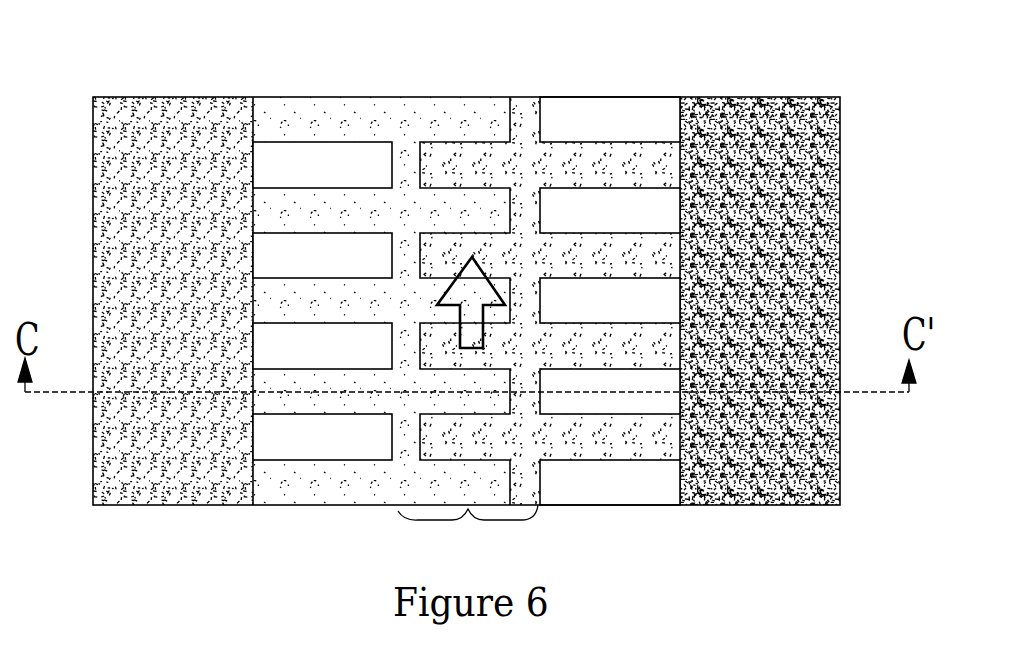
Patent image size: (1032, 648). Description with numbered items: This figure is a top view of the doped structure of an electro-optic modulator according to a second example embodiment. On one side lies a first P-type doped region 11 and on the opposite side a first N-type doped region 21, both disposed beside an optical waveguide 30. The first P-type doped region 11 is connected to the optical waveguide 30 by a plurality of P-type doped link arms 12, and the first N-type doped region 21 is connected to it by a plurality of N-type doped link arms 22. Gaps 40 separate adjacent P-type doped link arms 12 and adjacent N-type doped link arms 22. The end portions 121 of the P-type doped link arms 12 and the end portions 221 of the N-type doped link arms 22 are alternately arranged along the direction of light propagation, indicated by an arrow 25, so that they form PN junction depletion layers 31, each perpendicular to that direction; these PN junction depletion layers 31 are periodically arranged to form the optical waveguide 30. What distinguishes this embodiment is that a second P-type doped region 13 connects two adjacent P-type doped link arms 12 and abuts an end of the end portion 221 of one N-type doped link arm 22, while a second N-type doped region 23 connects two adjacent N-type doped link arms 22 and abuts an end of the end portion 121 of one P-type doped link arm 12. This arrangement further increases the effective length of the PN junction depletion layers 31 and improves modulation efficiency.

The first P-type doped region 11 is at (170, 132).
The P-type doped link arms 12 is at (366, 257).
The second P-type doped region 13 is at (402, 168).
The end portions of the P-type doped link arms 121 is at (455, 120).
The first N-type doped region 21 is at (763, 127).
The N-type doped link arms 22 is at (550, 270).
The second N-type doped region 23 is at (540, 210).
The end portions of the N-type doped link arms 221 is at (453, 163).
The arrow 25 is at (460, 323).
The optical waveguide 30 is at (468, 532).
The PN junction depletion layers 31 is at (447, 460).
The gaps 40 is at (281, 162).